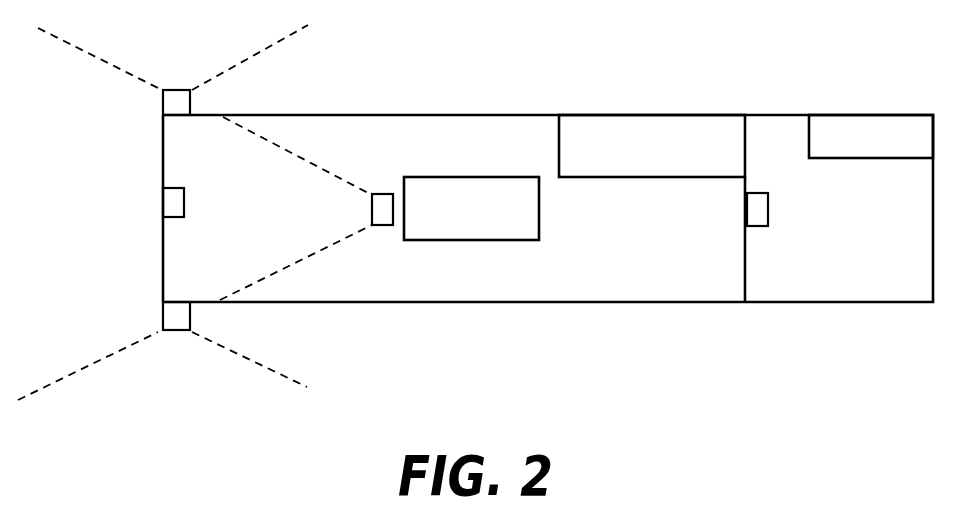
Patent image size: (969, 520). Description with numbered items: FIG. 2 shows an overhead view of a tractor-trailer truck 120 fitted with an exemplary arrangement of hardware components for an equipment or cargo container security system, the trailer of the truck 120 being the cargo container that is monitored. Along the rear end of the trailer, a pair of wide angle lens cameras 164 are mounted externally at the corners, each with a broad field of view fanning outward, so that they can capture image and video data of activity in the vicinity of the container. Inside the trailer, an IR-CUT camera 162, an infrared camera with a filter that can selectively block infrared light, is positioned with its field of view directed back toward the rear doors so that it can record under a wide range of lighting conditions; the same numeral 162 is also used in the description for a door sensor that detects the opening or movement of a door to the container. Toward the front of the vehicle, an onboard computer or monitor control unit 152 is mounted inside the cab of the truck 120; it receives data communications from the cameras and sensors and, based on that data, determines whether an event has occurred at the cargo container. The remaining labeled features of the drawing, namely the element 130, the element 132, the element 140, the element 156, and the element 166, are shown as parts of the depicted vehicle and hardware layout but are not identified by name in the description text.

The tractor-trailer truck 120 is at (828, 105).
The vehicle body 130 is at (484, 133).
The front end of vehicle 132 is at (163, 267).
The rear compartment 140 is at (896, 238).
The onboard computer 152 is at (753, 193).
The controller E 156 is at (472, 240).
The IR-CUT camera 162 is at (382, 193).
The wide angle lens camera 164 is at (175, 90).
The sensor C 166 is at (163, 197).